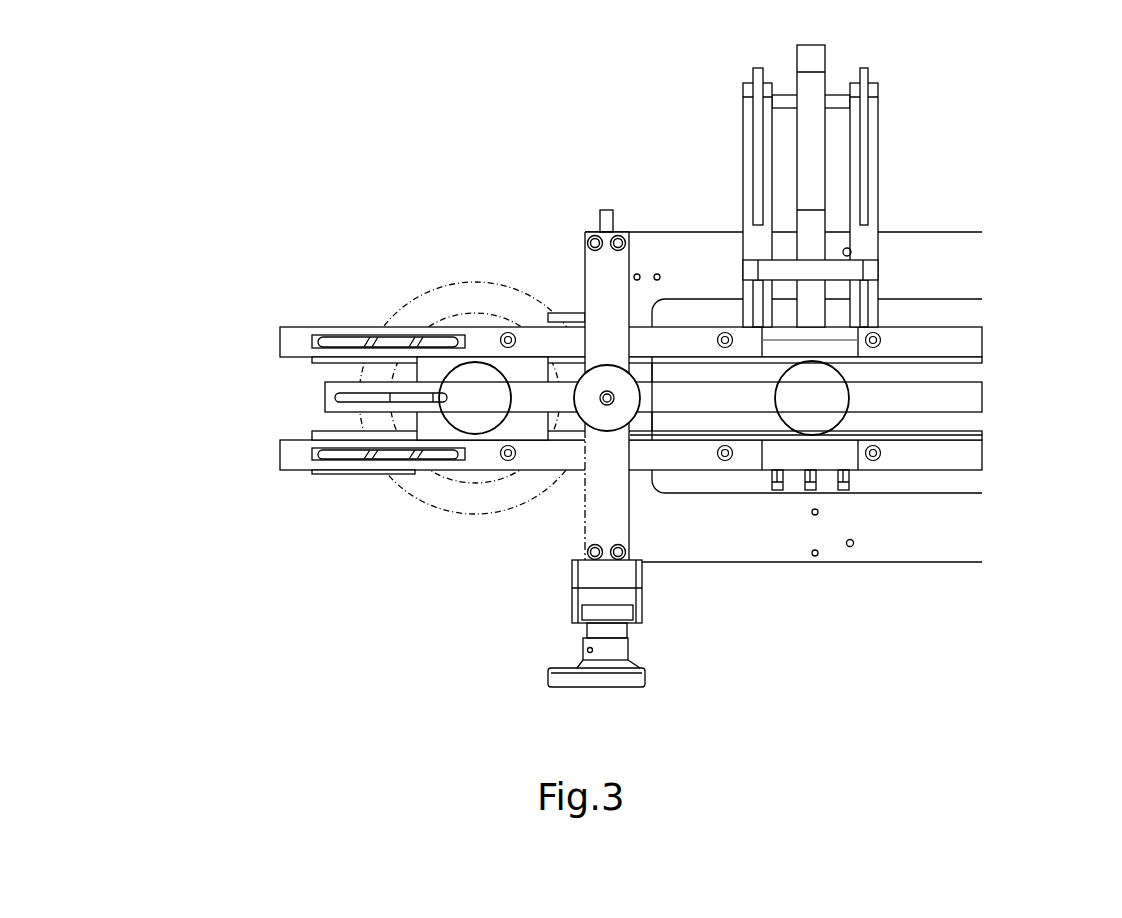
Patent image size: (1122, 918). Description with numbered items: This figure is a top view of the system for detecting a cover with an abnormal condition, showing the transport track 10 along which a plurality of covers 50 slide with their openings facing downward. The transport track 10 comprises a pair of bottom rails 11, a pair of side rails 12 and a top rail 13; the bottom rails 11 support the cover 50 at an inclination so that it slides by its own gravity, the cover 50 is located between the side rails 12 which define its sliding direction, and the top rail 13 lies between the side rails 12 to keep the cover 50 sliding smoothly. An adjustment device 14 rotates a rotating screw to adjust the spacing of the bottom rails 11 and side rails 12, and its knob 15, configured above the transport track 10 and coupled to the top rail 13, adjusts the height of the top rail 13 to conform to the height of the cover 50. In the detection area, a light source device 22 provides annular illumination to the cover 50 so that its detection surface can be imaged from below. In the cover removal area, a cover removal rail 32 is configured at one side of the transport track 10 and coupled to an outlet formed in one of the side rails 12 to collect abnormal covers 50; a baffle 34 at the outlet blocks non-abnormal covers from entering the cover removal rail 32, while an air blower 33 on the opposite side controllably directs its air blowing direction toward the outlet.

The transport track 10 is at (150, 307).
The bottom rails 11 is at (318, 359).
The side rails 12 is at (295, 335).
The top rail 13 is at (337, 407).
The adjustment device 14 is at (613, 578).
The knob 15 is at (598, 405).
The light source device 22 is at (450, 302).
The cover removal rail 32 is at (873, 142).
The air blower 33 is at (775, 490).
The baffle 34 is at (793, 340).
The cover 50 is at (477, 373).